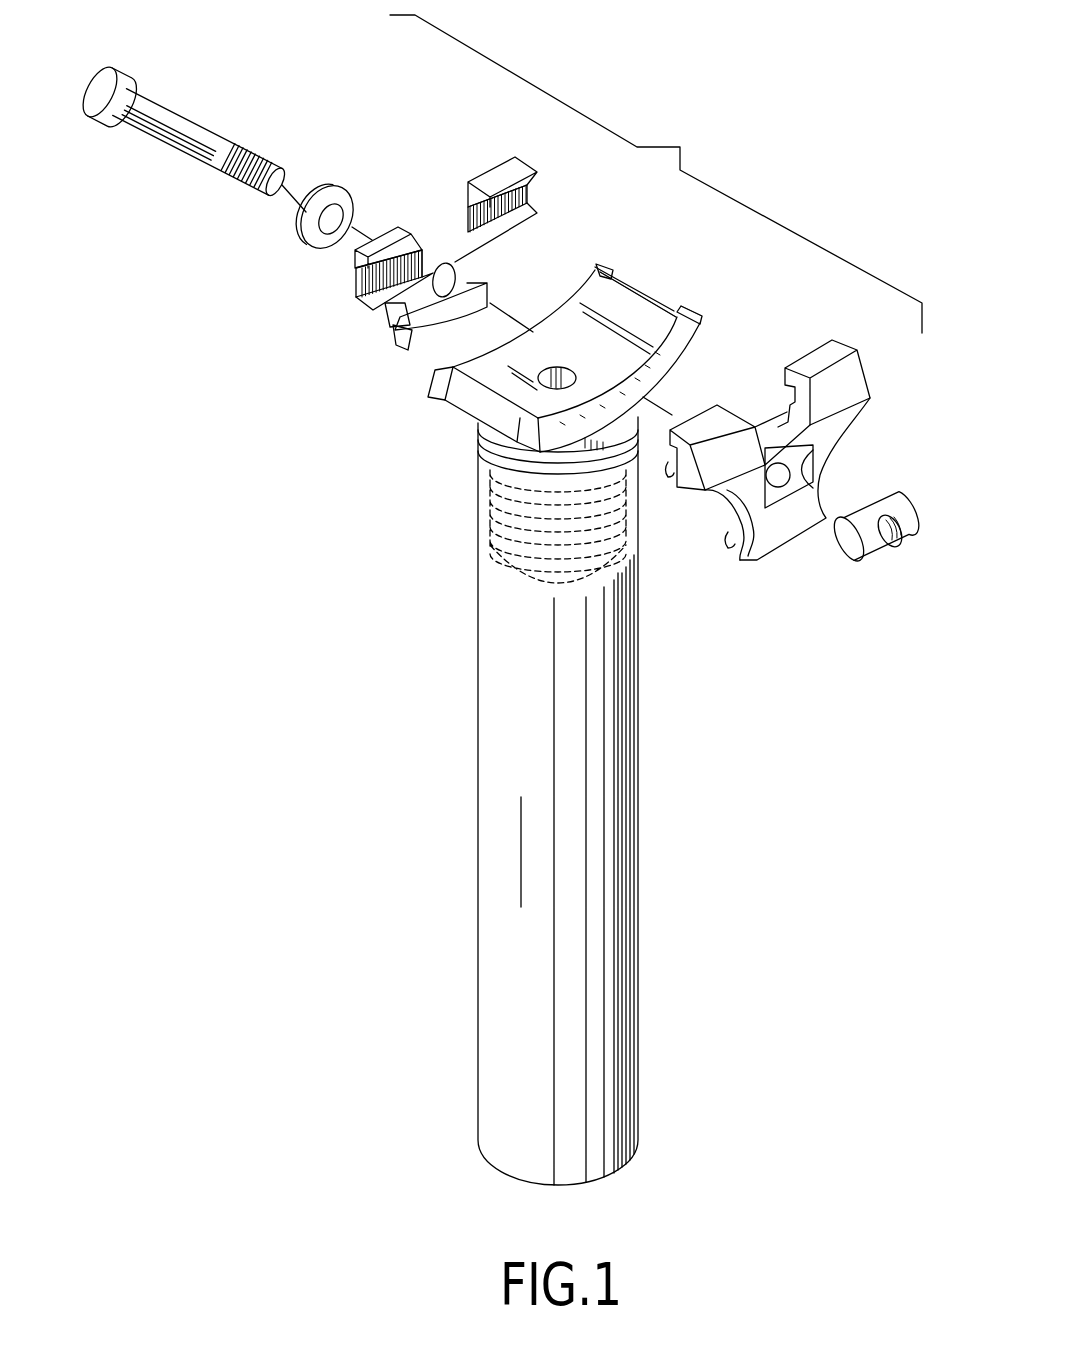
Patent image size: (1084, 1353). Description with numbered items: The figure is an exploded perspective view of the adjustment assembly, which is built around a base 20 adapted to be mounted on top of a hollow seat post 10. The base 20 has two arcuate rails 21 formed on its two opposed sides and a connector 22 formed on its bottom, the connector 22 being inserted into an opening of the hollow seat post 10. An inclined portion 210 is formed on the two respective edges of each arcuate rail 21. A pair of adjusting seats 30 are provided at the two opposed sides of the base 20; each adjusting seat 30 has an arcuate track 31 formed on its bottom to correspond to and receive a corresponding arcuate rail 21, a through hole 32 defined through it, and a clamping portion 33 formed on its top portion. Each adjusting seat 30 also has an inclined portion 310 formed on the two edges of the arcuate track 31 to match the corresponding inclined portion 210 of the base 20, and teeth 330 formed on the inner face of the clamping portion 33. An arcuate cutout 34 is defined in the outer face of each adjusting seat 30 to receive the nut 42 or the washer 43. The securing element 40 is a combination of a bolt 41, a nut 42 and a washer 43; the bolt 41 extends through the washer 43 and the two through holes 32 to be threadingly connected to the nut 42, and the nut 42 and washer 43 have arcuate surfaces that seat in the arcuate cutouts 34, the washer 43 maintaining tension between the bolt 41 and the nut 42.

The hollow seat post 10 is at (523, 801).
The base 20 is at (601, 340).
The arcuate rail 21 is at (596, 265).
The inclined portion 210 is at (690, 313).
The connector 22 is at (490, 548).
The adjusting seat 30 is at (574, 404).
The arcuate track 31 is at (413, 357).
The inclined portion 310 is at (400, 328).
The through hole 32 is at (463, 268).
The clamping portion 33 is at (564, 352).
The teeth 330 is at (373, 282).
The arcuate cutout 34 is at (778, 498).
The securing element 40 is at (497, 337).
The bolt 41 is at (157, 106).
The nut 42 is at (875, 550).
The washer 43 is at (330, 191).